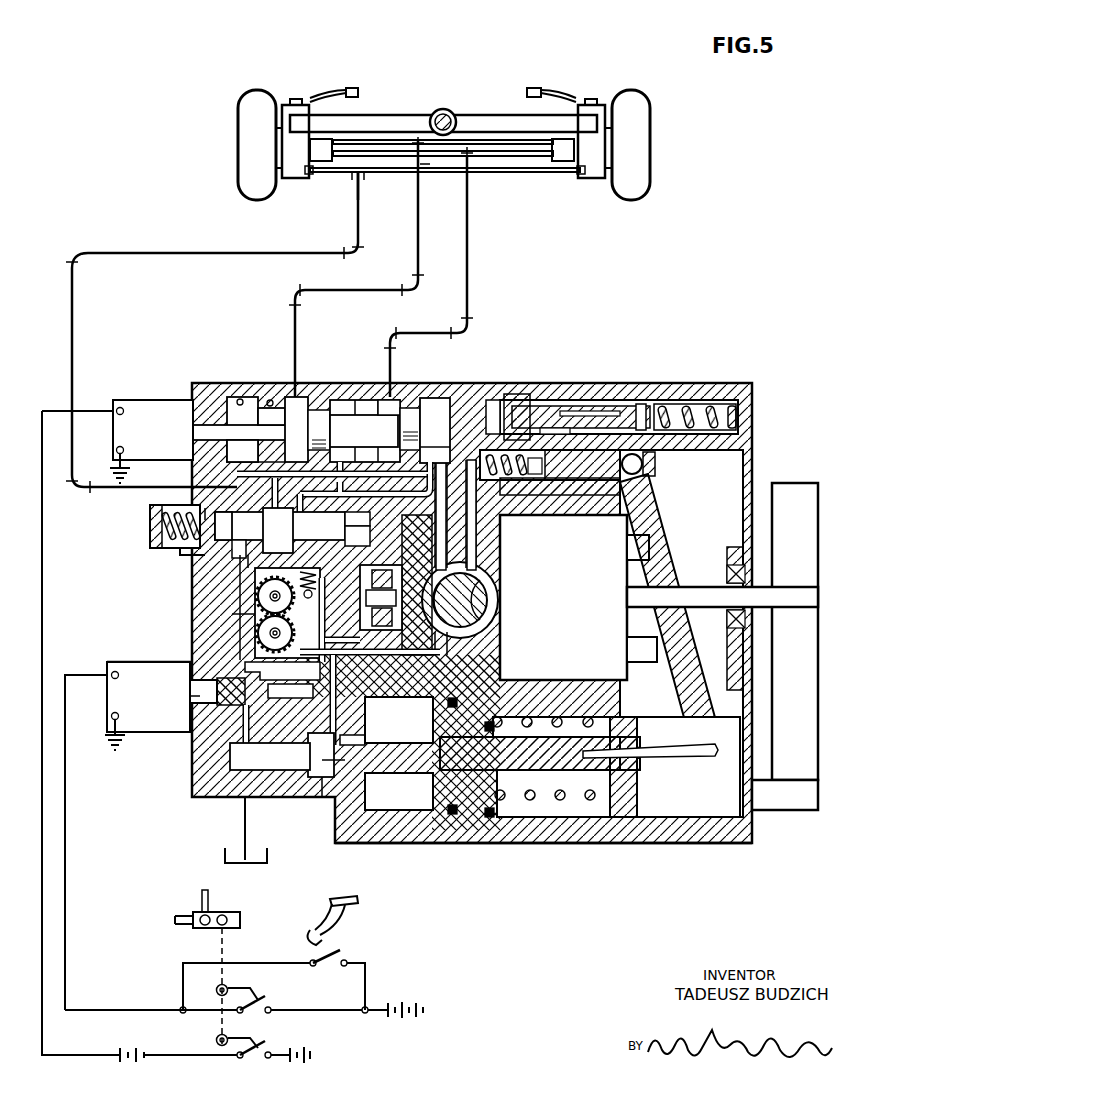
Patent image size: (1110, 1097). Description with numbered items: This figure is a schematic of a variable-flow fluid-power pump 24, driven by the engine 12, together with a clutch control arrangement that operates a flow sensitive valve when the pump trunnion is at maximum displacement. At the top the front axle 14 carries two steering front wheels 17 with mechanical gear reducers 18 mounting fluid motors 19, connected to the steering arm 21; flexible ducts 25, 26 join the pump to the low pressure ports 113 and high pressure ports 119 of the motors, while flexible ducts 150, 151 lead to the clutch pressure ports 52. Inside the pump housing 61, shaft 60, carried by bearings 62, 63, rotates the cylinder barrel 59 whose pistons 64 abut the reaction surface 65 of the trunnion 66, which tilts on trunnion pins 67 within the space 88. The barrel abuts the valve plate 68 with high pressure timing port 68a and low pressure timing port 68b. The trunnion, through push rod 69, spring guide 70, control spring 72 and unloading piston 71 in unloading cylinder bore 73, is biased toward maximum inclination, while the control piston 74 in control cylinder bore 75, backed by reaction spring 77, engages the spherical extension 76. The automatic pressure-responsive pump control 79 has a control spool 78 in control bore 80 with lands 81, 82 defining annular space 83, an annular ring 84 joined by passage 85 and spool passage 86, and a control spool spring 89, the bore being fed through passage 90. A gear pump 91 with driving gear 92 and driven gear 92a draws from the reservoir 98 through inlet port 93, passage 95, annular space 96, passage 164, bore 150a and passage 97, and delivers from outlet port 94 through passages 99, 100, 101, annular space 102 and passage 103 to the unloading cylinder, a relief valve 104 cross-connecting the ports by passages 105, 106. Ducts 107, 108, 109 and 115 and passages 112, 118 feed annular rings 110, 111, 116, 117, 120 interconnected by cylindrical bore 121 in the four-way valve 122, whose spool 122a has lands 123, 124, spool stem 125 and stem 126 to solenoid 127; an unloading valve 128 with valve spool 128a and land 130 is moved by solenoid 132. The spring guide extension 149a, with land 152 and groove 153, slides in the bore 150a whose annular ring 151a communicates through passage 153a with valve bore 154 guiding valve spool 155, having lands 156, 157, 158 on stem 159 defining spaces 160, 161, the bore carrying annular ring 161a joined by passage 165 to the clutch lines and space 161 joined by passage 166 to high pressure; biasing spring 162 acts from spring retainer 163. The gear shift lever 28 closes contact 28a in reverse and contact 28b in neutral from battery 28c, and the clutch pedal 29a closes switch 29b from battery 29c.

The engine 12 is at (785, 646).
The front axle 14 is at (460, 114).
The steering front wheels 17 is at (640, 130).
The mechanical gear reducers 18 is at (444, 138).
The fluid motors 19 is at (443, 150).
The steering arm 21 is at (534, 90).
The variable-flow fluid-power pump 24 is at (762, 404).
The flexible duct 25 is at (424, 254).
The flexible duct 26 is at (477, 262).
The gear shift lever 28 is at (212, 902).
The contact 28a is at (268, 1038).
The contact 28b is at (268, 1000).
The battery 28c is at (134, 1048).
The clutch pedal 29a is at (356, 912).
The switch 29b is at (348, 949).
The battery 29c is at (398, 1006).
The pressure ports of the clutches 52 is at (578, 176).
The cylinder barrel 59 is at (574, 597).
The shaft 60 is at (760, 598).
The pump housing 61 is at (683, 843).
The bearing 62 is at (745, 622).
The bearing 63 is at (378, 570).
The pistons 64 is at (646, 668).
The reaction surface 65 is at (700, 705).
The trunnion 66 is at (670, 540).
The trunnion pins 67 is at (695, 592).
The valve plate 68 is at (460, 533).
The high pressure timing port 68a is at (478, 586).
The low pressure timing port 68b is at (451, 600).
The push rod 69 is at (690, 760).
The spring guide 70 is at (638, 728).
The unloading piston 71 is at (540, 757).
The control spring 72 is at (612, 724).
The unloading cylinder bore 73 is at (399, 720).
The control piston 74 is at (575, 478).
The control cylinder bore 75 is at (540, 462).
The spherical extension 76 is at (645, 463).
The reaction spring 77 is at (550, 474).
The control spool 78 is at (575, 405).
The automatic pressure-responsive pump control 79 is at (655, 400).
The control bore 80 is at (690, 400).
The land 81 is at (625, 400).
The land 82 is at (500, 400).
The annular space 83 is at (565, 405).
The annular ring 84 is at (535, 400).
The passage 85 is at (560, 434).
The passage 86 is at (640, 400).
The space 88 is at (681, 633).
The control spool spring 89 is at (725, 400).
The passage 90 is at (462, 410).
The gear pump 91 is at (285, 627).
The driving gear 92 is at (255, 604).
The driven gear 92a is at (258, 650).
The inlet port 93 is at (230, 616).
The outlet port 94 is at (322, 612).
The passage 95 is at (248, 646).
The annular space 96 is at (226, 696).
The passage 97 is at (248, 846).
The reservoir 98 is at (268, 862).
The passage 99 is at (332, 640).
The passage 100 is at (370, 655).
The passage 101 is at (370, 662).
The annular space 102 is at (282, 694).
The passage 103 is at (336, 724).
The relief valve 104 is at (322, 584).
The passage 105 is at (372, 600).
The passage 106 is at (252, 586).
The duct 107 is at (432, 540).
The duct 108 is at (276, 464).
The duct 109 is at (242, 472).
The annular ring 110 is at (238, 398).
The annular ring 111 is at (272, 400).
The passage 112 is at (306, 411).
The low pressure ports 113 is at (548, 142).
The duct 115 is at (350, 462).
The annular ring 116 is at (364, 431).
The annular ring 117 is at (388, 398).
The passage 118 is at (405, 406).
The high pressure ports 119 is at (540, 170).
The annular ring 120 is at (445, 396).
The cylindrical bore 121 is at (270, 396).
The four-way valve 122 is at (236, 410).
The spool 122a is at (358, 398).
The land 123 is at (318, 404).
The land 124 is at (415, 405).
The spool stem 125 is at (338, 398).
The stem 126 is at (245, 449).
The solenoid 127 is at (151, 441).
The unloading valve 128 is at (188, 686).
The valve spool 128a is at (190, 700).
The land 130 is at (192, 665).
The solenoid 132 is at (147, 706).
The extension 149a is at (399, 789).
The flexible duct 150 is at (290, 253).
The bore 150a is at (270, 755).
The flexible duct 151 is at (400, 173).
The annular ring 151a is at (325, 780).
The land 152 is at (326, 755).
The groove 153 is at (367, 733).
The passage 153a is at (356, 700).
The valve bore 154 is at (340, 526).
The valve spool 155 is at (223, 554).
The land 156 is at (200, 500).
The land 157 is at (280, 530).
The land 158 is at (340, 538).
The stem 159 is at (229, 571).
The space 160 is at (242, 520).
The space 161 is at (325, 502).
The annular ring 161a is at (300, 495).
The biasing spring 162 is at (168, 555).
The spring retainer 163 is at (152, 525).
The passage 164 is at (246, 722).
The passage 165 is at (196, 483).
The passage 166 is at (365, 486).